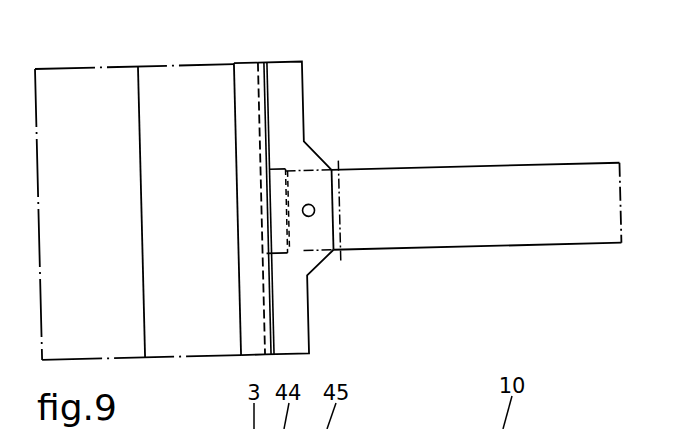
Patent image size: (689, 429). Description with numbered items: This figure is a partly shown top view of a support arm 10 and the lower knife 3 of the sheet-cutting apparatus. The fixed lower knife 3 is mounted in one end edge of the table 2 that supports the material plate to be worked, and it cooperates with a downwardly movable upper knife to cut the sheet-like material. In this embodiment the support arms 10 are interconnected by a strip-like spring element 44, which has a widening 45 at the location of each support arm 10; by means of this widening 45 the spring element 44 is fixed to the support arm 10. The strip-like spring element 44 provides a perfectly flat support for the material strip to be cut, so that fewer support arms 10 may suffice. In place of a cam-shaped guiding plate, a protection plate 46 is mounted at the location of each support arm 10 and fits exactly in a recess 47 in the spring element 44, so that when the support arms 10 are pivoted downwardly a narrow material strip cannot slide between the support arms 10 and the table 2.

The table 2 is at (176, 75).
The lower knife 3 is at (243, 70).
The support arm 10 is at (503, 178).
The spring element 44 is at (293, 102).
The widening 45 is at (315, 178).
The protection plate 46 is at (275, 218).
The recess 47 is at (280, 192).